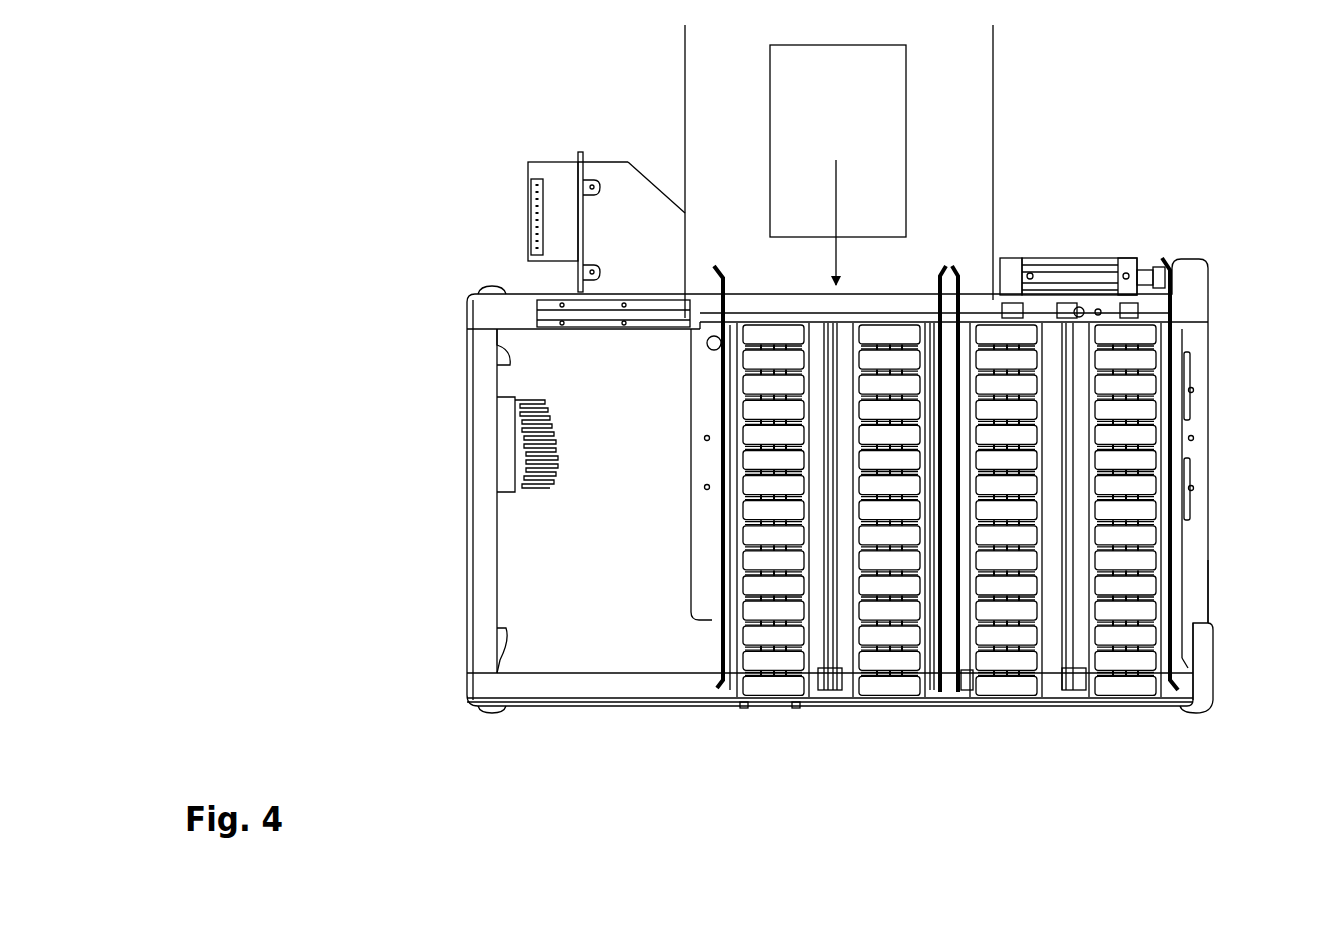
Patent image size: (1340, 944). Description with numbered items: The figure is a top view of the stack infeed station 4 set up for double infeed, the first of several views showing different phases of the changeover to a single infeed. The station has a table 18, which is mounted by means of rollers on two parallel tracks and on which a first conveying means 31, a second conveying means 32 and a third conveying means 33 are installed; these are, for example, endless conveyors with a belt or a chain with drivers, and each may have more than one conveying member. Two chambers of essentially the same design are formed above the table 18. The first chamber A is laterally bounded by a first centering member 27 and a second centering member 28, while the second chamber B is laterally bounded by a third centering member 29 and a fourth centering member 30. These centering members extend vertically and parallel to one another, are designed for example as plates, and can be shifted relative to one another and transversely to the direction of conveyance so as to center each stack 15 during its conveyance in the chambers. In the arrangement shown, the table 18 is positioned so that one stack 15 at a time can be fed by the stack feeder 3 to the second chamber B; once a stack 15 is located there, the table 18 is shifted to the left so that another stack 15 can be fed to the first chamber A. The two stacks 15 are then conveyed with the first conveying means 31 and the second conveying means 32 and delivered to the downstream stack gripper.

The stack feeder 3 is at (993, 133).
The stack infeed station 4 is at (1222, 264).
The stack 15 is at (806, 115).
The table 18 is at (1200, 648).
The first centering member 27 is at (1180, 682).
The second centering member 28 is at (968, 690).
The third centering member 29 is at (925, 690).
The fourth centering member 30 is at (723, 683).
The first conveying means 31 is at (1070, 688).
The second conveying means 32 is at (827, 688).
The third conveying means 33 is at (946, 692).
The first chamber A is at (1082, 540).
The second chamber B is at (817, 512).